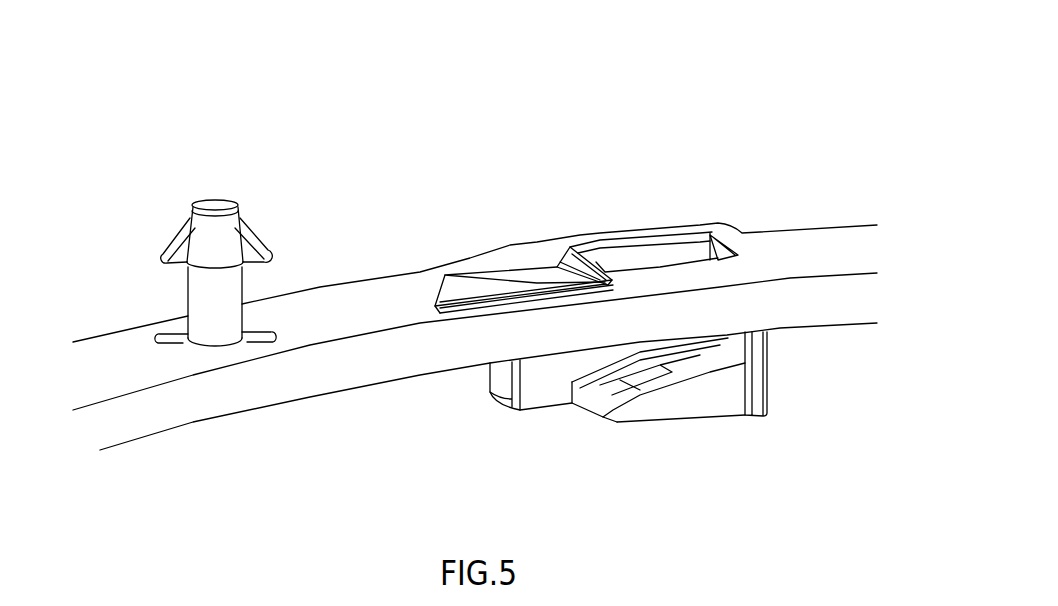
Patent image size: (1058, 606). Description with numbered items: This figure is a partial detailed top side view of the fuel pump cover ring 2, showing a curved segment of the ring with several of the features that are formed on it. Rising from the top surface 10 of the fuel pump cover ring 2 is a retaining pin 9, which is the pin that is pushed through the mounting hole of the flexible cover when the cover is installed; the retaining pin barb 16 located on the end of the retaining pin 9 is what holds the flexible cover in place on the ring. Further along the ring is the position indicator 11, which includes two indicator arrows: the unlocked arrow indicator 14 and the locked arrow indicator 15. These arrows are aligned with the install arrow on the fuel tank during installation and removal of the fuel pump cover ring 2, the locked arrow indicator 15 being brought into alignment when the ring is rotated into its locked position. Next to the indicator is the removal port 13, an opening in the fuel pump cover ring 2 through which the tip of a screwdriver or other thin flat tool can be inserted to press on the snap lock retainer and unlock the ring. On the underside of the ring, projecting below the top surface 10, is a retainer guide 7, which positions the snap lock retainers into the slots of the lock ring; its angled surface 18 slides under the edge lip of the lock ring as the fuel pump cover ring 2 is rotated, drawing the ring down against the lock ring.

The fuel pump cover ring 2 is at (813, 82).
The retainer guide 7 is at (617, 419).
The retaining pin 9 is at (166, 224).
The top surface 10 is at (802, 255).
The position indicator 11 is at (535, 278).
The removal port 13 is at (672, 257).
The unlocked arrow indicator 14 is at (483, 187).
The locked arrow indicator 15 is at (568, 243).
The retaining pin barb 16 is at (165, 240).
The angled surface 18 is at (572, 403).